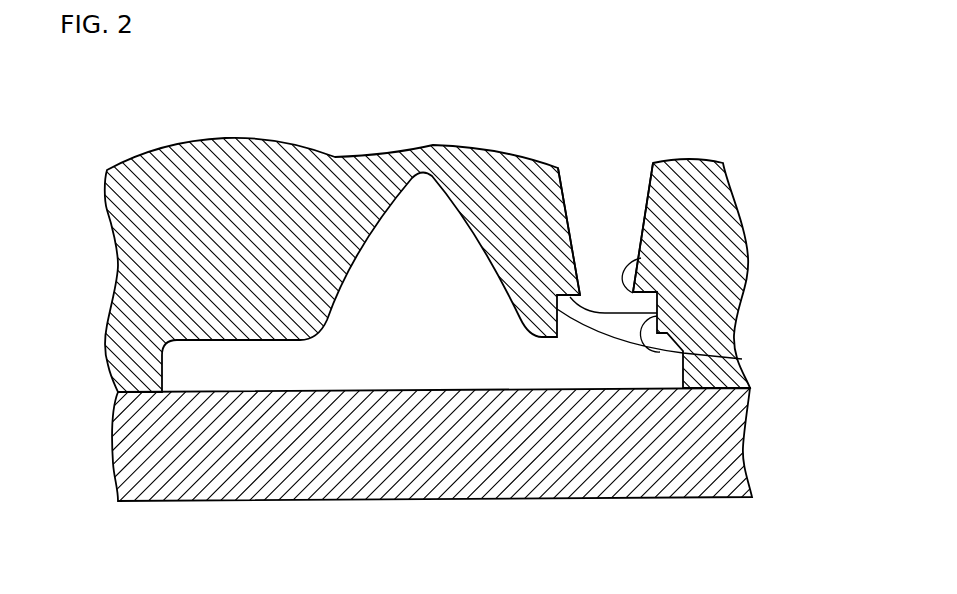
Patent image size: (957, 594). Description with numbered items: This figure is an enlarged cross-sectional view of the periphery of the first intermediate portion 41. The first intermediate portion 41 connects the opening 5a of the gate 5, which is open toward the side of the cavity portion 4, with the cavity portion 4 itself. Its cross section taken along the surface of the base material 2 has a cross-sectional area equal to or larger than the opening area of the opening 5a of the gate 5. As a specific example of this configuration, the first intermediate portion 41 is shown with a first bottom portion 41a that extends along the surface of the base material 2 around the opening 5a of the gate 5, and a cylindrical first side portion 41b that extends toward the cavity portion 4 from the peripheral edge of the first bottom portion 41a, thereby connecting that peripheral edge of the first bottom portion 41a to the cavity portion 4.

The base material 2 is at (727, 450).
The cavity portion 4 is at (420, 175).
The gate 5 is at (645, 203).
The opening 5a is at (580, 295).
The first intermediate portion 41 is at (711, 331).
The first bottom portion 41a is at (657, 313).
The first side portion 41b is at (686, 347).